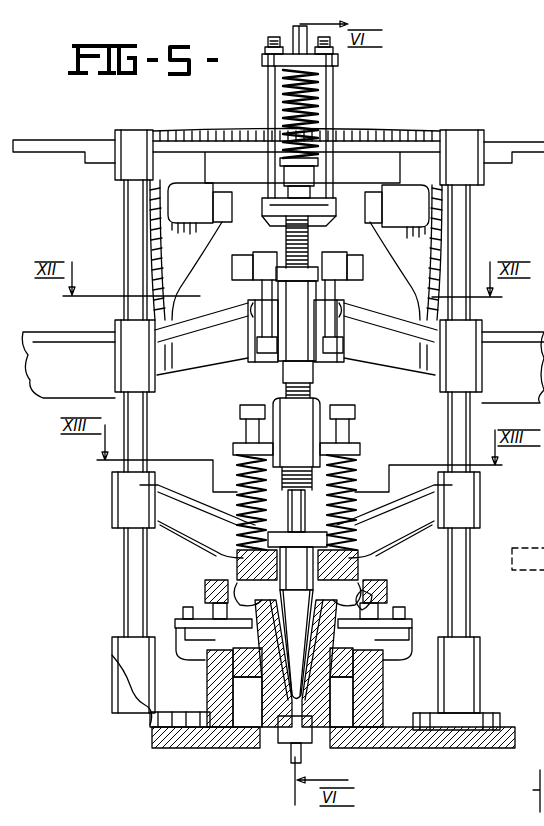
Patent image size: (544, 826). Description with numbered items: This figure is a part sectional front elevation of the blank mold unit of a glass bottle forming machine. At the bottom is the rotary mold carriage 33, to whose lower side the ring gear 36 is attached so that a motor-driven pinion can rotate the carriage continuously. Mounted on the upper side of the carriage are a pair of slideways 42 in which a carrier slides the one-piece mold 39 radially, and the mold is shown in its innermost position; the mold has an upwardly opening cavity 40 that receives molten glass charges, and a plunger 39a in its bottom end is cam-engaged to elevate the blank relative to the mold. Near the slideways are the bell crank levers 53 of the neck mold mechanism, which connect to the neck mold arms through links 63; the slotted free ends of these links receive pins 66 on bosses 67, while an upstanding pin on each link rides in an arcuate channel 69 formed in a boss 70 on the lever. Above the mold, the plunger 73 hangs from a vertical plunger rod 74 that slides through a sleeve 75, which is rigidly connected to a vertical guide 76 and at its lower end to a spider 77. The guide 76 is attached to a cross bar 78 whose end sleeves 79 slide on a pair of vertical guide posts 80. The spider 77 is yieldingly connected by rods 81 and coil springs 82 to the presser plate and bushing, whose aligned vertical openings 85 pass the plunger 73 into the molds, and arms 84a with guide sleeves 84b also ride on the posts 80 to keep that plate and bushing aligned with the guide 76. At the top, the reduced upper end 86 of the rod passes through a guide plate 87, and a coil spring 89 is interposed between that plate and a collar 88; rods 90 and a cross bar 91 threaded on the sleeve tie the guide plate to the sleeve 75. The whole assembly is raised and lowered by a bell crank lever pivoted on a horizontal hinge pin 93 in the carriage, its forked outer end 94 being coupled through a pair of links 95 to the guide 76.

The rotary mold carriage 33 is at (422, 745).
The ring gear 36 is at (522, 791).
The one-piece mold 39 is at (315, 710).
The plunger 39a is at (302, 758).
The cavity 40 is at (283, 680).
The slideways 42 is at (382, 693).
The bell crank levers 53 is at (205, 580).
The links 63 is at (238, 626).
The pins 66 is at (190, 613).
The bosses 67 is at (200, 680).
The arcuate channel 69 is at (385, 605).
The boss 70 is at (362, 587).
The plunger 73 is at (296, 658).
The plunger rod 74 is at (297, 502).
The sleeve 75 is at (312, 387).
The vertical guide 76 is at (296, 325).
The spider 77 is at (338, 437).
The cross bar 78 is at (187, 372).
The vertical sleeves 79 is at (128, 363).
The vertical guide posts 80 is at (138, 415).
The rods 81 is at (275, 420).
The coil springs 82 is at (240, 460).
The arms 84a is at (200, 537).
The vertical guide sleeves 84b is at (124, 500).
The vertical openings 85 is at (279, 557).
The reduced upper end 86 is at (293, 25).
The guide plate 87 is at (338, 60).
The collar 88 is at (307, 172).
The coil spring 89 is at (313, 88).
The rods 90 is at (272, 85).
The cross bar 91 is at (299, 212).
The horizontal hinge pin 93 is at (202, 197).
The forked outer end 94 is at (354, 217).
The links 95 is at (263, 283).